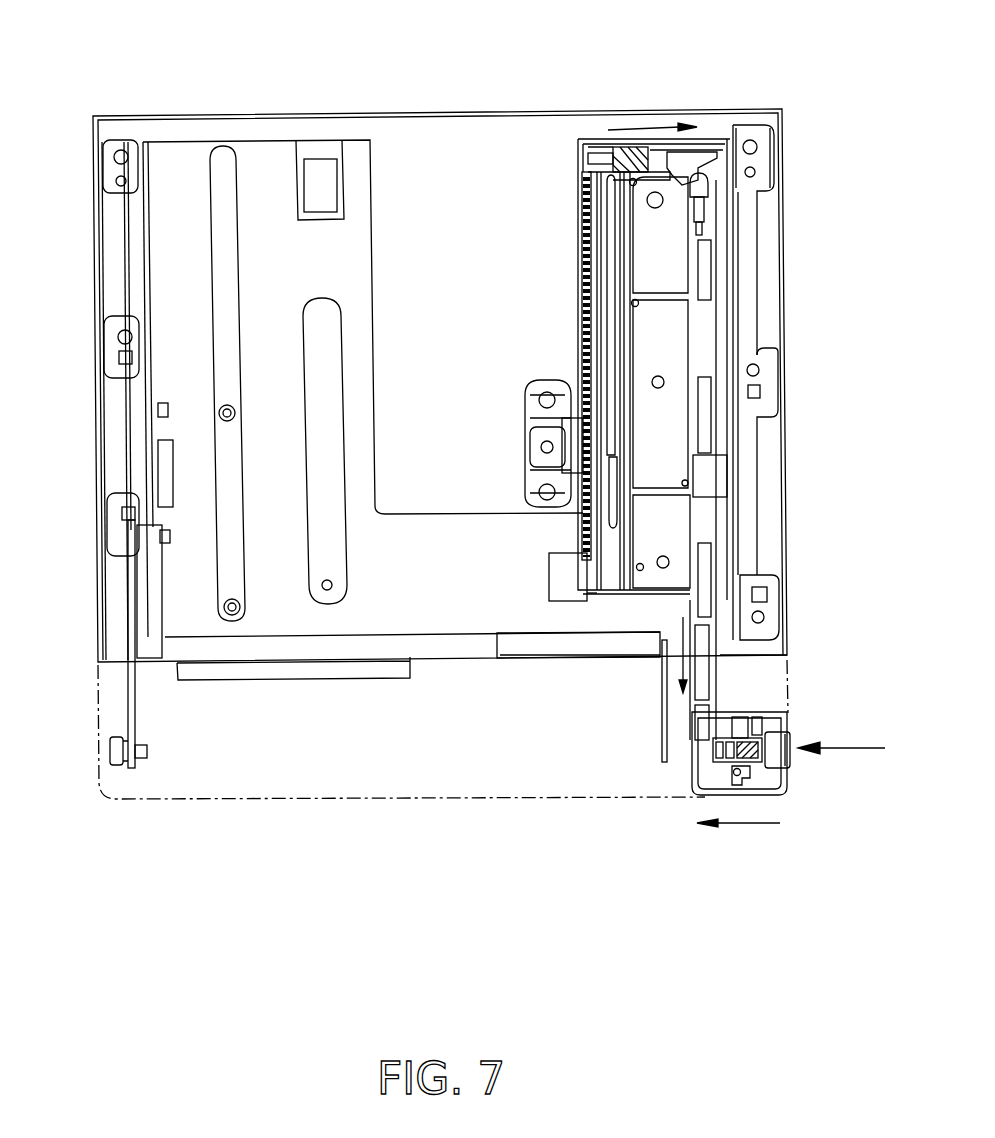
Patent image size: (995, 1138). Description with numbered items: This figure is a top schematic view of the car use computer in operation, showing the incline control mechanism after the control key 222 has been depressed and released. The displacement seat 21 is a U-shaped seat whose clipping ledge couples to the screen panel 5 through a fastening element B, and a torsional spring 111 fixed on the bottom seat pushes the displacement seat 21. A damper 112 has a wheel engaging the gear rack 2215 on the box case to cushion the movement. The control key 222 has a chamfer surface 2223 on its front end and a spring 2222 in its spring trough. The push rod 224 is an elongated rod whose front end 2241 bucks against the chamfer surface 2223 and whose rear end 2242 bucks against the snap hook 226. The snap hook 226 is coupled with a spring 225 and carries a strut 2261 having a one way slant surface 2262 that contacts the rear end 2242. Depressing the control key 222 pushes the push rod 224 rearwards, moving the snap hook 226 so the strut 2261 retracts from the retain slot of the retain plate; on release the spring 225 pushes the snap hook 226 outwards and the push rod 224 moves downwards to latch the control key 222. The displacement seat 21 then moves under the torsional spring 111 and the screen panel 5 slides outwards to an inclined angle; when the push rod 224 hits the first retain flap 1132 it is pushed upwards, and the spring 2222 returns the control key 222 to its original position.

The screen panel 5 is at (312, 803).
The displacement seat 21 is at (238, 140).
The torsional spring 111 is at (320, 170).
The damper 112 is at (515, 385).
The gear rack 2215 is at (582, 233).
The spring 225 is at (613, 147).
The snap hook 226 is at (688, 160).
The strut 2261 is at (698, 167).
The one way slant surface 2262 is at (702, 185).
The rear end 2242 is at (702, 180).
The first retain flap 1132 is at (713, 477).
The push rod 224 is at (710, 670).
The front end 2241 is at (713, 730).
The spring 2222 is at (750, 757).
The chamfer surface 2223 is at (735, 777).
The control key 222 is at (756, 888).
The fastening element B is at (108, 752).